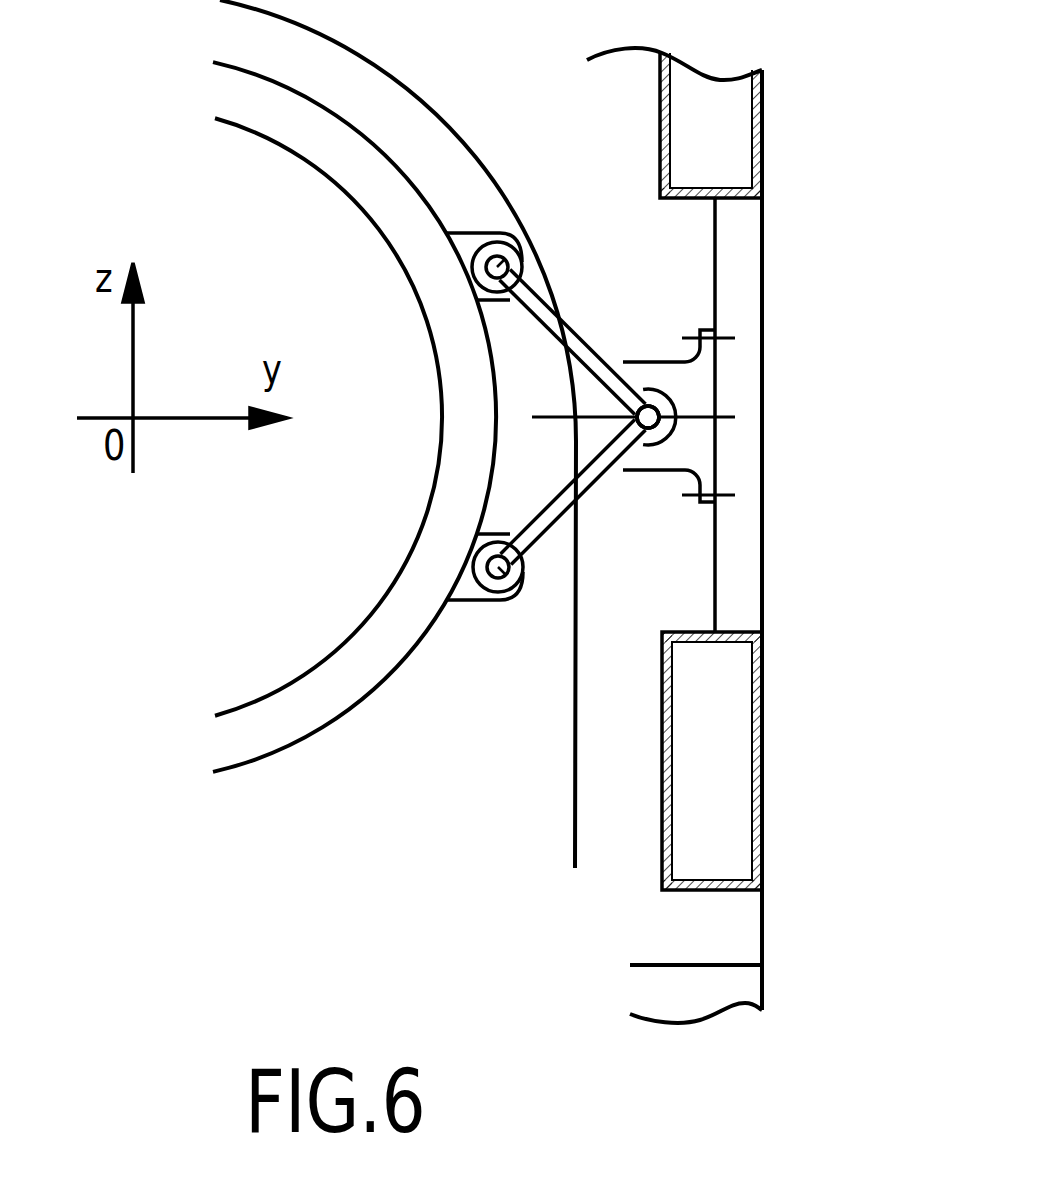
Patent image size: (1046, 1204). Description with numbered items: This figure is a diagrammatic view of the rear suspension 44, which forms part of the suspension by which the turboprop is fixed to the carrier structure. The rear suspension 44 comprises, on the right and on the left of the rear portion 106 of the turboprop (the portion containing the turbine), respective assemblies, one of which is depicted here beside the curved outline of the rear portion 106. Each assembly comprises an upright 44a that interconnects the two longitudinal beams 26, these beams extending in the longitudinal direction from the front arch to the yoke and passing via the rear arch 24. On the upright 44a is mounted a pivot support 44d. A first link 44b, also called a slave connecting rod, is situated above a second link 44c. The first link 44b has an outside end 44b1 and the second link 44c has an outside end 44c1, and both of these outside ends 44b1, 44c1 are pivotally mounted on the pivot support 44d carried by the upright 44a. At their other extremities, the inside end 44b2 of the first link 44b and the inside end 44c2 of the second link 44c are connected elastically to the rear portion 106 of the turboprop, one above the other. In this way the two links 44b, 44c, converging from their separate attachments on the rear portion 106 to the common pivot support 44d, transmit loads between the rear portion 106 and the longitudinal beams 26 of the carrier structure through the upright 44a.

The rear arch 24 is at (582, 135).
The longitudinal beams 26 is at (763, 125).
The rear suspension 44 is at (792, 312).
The upright 44a is at (762, 548).
The first link 44b is at (572, 335).
The outside end of the first link 44b1 is at (605, 378).
The inside end of the first link 44b2 is at (517, 257).
The second link 44c is at (590, 478).
The outside end of the second link 44c1 is at (600, 450).
The inside end of the second link 44c2 is at (507, 600).
The pivot support 44d is at (683, 447).
The rear portion 106 is at (253, 295).